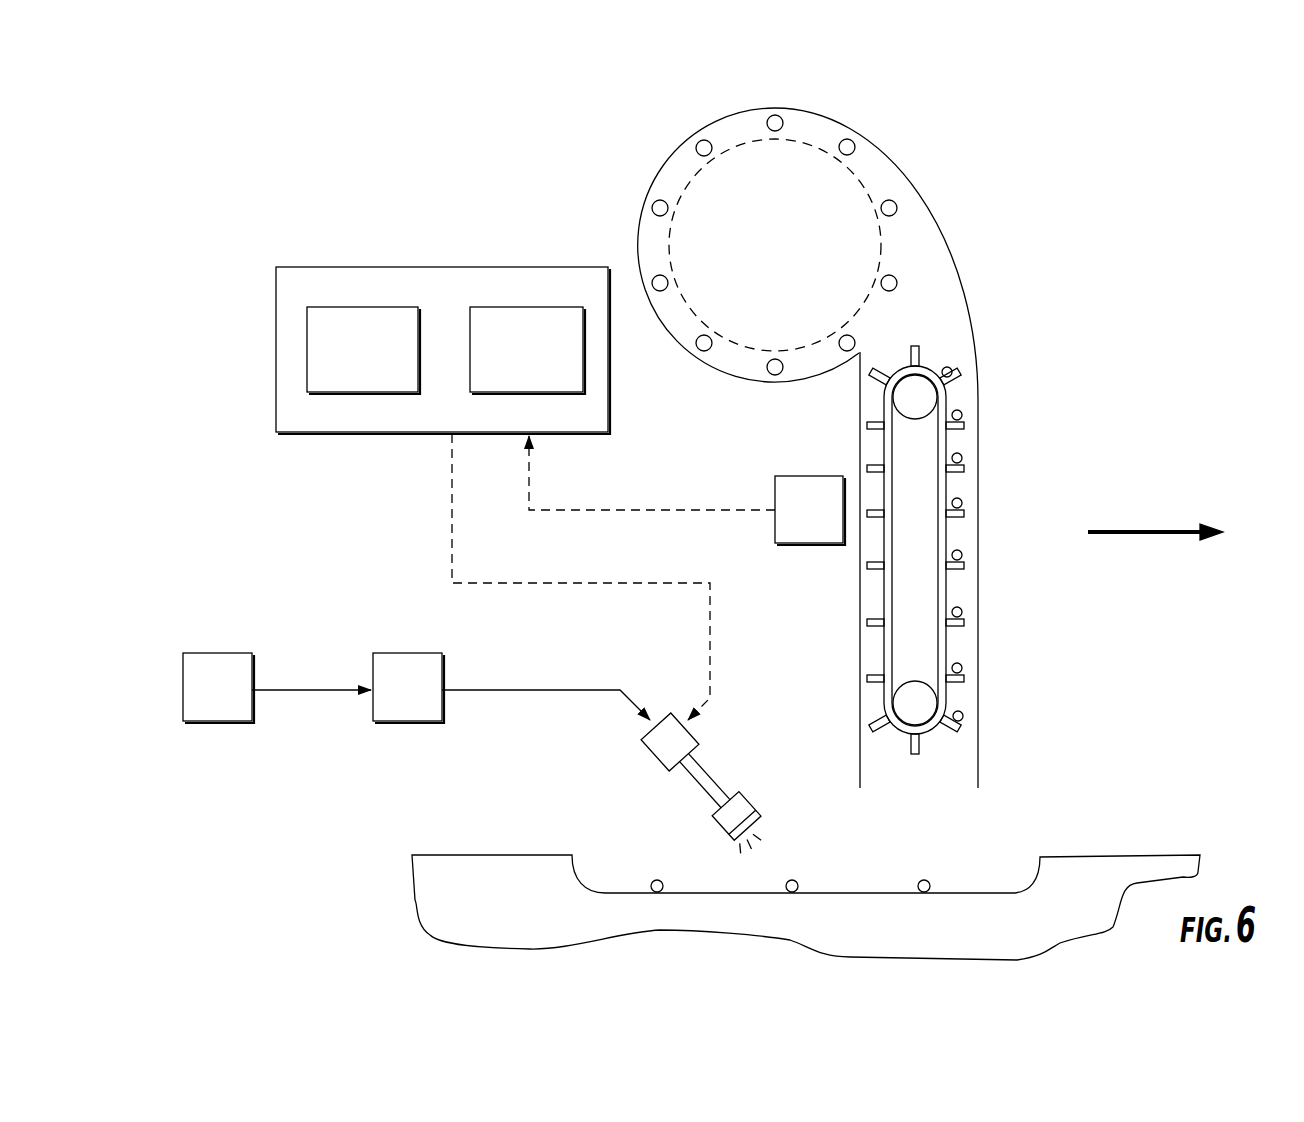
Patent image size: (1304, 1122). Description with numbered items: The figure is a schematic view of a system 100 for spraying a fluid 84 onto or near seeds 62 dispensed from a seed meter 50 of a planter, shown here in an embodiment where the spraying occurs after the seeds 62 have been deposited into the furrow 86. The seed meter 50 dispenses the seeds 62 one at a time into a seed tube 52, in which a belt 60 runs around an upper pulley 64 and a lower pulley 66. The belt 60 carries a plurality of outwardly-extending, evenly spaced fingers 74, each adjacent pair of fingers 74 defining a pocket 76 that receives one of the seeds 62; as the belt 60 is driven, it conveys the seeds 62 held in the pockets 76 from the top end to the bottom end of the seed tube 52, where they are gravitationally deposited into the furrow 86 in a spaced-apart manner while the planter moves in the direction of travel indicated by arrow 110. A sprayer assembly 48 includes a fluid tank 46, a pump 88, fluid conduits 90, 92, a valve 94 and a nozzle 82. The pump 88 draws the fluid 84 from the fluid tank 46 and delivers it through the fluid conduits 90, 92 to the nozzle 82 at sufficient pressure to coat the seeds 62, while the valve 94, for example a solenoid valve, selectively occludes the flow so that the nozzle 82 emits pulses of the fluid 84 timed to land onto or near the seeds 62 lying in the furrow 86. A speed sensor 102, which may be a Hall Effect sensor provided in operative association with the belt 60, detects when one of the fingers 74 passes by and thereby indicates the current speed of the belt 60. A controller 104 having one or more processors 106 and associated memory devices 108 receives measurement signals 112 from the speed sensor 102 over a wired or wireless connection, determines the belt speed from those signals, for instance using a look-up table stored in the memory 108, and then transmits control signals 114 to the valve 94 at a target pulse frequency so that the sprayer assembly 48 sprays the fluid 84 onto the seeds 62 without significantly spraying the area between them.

The fluid tank 46 is at (229, 704).
The sprayer assembly 48 is at (289, 596).
The seed meter 50 is at (783, 98).
The seed tube 52 is at (867, 624).
The belt 60 is at (946, 588).
The seeds 62 is at (853, 141).
The upper pulley 64 is at (922, 382).
The lower pulley 66 is at (930, 728).
The fingers 74 is at (878, 462).
The pocket 76 is at (876, 557).
The nozzle 82 is at (746, 802).
The fluid 84 is at (761, 829).
The furrow 86 is at (998, 870).
The pump 88 is at (419, 704).
The fluid conduit 90 is at (322, 691).
The fluid conduit 92 is at (570, 687).
The valve 94 is at (652, 753).
The system 100 is at (343, 158).
The speed sensor 102 is at (825, 527).
The controller 104 is at (400, 267).
The processor 106 is at (379, 365).
The memory device 108 is at (542, 365).
The direction of travel 110 is at (1160, 537).
The measurement signals 112 is at (598, 514).
The control signals 114 is at (572, 582).